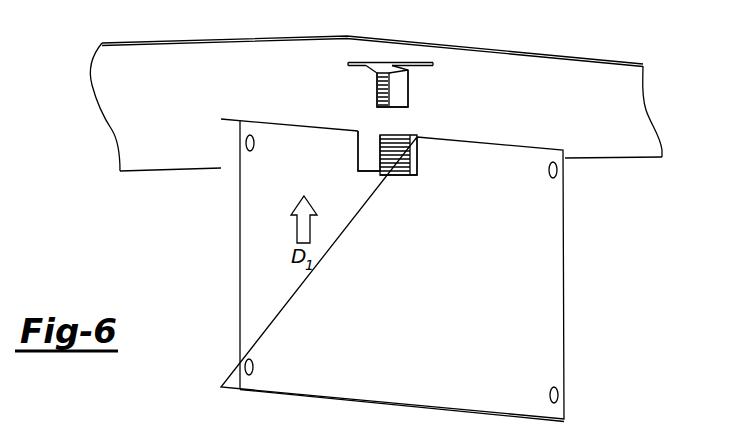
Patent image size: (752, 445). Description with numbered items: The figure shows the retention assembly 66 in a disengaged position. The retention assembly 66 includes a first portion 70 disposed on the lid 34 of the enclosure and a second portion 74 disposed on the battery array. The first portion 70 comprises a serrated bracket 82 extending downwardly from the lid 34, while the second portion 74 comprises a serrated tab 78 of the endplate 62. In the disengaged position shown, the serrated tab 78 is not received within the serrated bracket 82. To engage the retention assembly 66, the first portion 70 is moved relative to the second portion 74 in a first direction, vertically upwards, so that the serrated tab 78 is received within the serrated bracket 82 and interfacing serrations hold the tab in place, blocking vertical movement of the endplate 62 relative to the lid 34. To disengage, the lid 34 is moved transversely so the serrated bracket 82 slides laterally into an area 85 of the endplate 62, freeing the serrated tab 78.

The lid 34 is at (543, 53).
The first portion 70 is at (360, 62).
The serrated bracket 82 is at (424, 87).
The endplate 62 is at (530, 282).
The second portion 74 is at (373, 176).
The area 85 is at (371, 151).
The serrated tab 78 is at (407, 155).
The retention assembly 66 is at (417, 177).